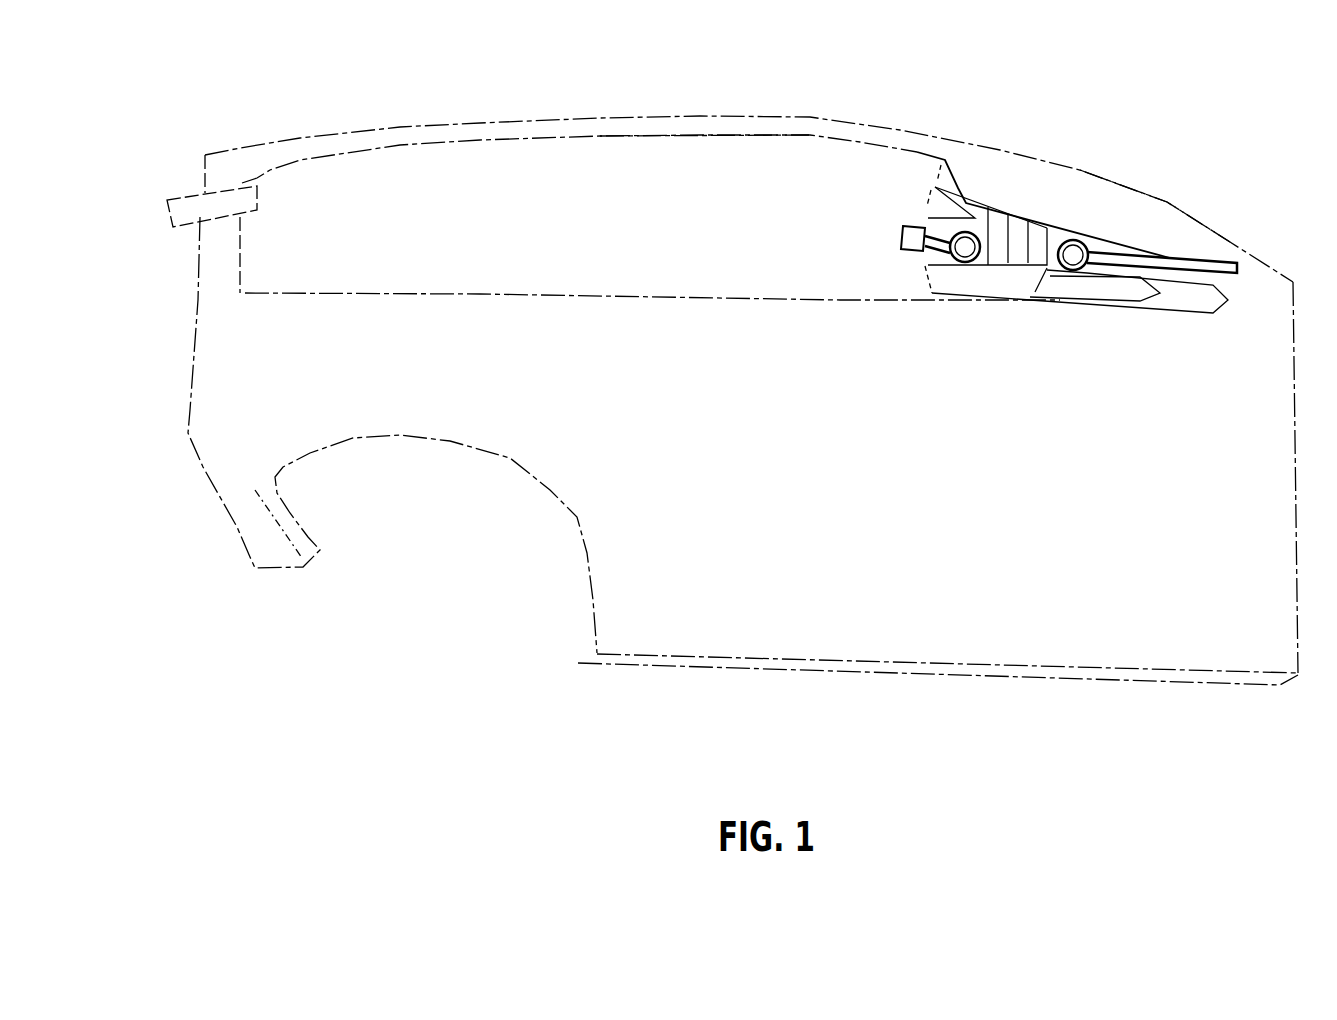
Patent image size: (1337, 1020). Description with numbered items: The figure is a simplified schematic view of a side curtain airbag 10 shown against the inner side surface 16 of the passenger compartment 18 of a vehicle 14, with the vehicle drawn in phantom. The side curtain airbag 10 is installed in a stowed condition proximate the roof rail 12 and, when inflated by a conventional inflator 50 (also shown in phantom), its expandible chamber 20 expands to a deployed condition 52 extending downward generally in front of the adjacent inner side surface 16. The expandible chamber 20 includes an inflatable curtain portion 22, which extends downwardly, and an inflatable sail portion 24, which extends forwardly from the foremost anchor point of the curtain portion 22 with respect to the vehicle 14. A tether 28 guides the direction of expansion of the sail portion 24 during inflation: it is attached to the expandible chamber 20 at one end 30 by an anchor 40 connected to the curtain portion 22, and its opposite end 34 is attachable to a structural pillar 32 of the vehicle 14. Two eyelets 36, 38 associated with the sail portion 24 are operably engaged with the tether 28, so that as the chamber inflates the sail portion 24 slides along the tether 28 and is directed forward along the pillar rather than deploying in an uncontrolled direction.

The side curtain airbag 10 is at (578, 150).
The roof rail 12 is at (1052, 220).
The vehicle 14 is at (675, 615).
The inner side surface 16 is at (547, 422).
The passenger compartment 18 is at (1095, 625).
The expandible chamber 20 is at (441, 160).
The inflatable curtain portion 22 is at (720, 147).
The inflatable sail portion 24 is at (1010, 300).
The tether 28 is at (1188, 273).
The one end of tether 30 is at (925, 232).
The structural pillar 32 is at (1171, 182).
The opposite end of tether 34 is at (1222, 262).
The eyelet 36 is at (1073, 270).
The eyelet 38 is at (963, 263).
The anchor 40 is at (903, 247).
The inflator 50 is at (228, 185).
The deployed condition 52 is at (513, 297).